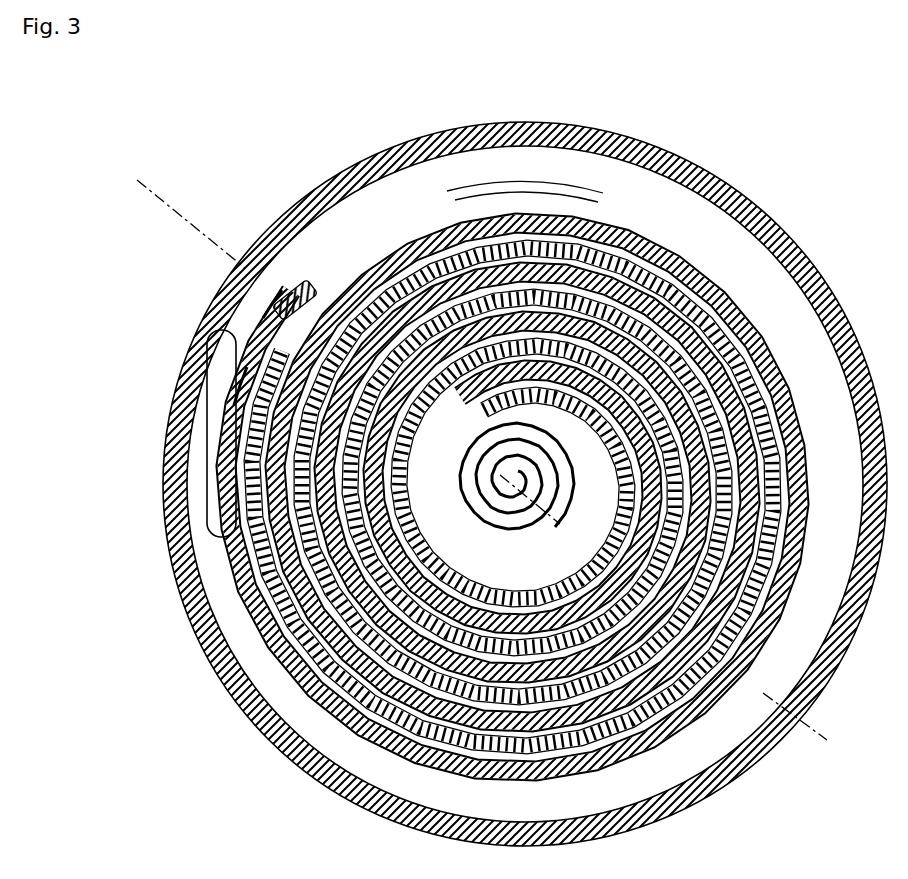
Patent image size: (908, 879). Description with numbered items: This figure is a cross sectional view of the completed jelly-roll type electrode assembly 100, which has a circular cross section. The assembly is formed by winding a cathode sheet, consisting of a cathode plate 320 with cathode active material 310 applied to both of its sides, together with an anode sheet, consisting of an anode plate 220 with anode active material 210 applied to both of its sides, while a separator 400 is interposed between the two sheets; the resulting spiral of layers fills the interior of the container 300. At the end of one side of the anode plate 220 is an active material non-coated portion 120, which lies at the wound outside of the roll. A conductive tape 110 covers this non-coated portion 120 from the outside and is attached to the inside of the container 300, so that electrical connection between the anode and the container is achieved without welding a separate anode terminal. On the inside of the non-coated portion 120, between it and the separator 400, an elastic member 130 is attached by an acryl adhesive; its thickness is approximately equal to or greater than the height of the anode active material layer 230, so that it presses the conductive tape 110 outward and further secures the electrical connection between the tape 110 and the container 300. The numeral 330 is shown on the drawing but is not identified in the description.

The jelly-roll type electrode assembly 100 is at (60, 83).
The conductive tape 110 is at (240, 386).
The active material non-coated portion 120 is at (258, 330).
The elastic member 130 is at (285, 283).
The anode active material 210 is at (322, 208).
The anode plate 220 is at (368, 205).
The anode active material layer 230 is at (405, 230).
The container 300 is at (185, 440).
The cathode active material 310 is at (463, 182).
The cathode plate 320 is at (503, 190).
The third layer 330 is at (547, 187).
The separator 400 is at (218, 482).